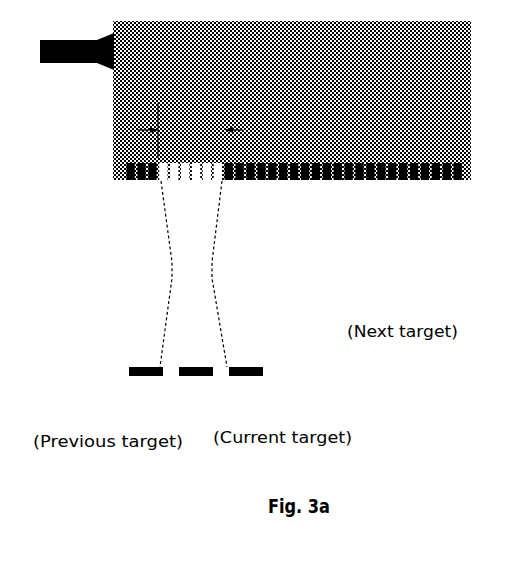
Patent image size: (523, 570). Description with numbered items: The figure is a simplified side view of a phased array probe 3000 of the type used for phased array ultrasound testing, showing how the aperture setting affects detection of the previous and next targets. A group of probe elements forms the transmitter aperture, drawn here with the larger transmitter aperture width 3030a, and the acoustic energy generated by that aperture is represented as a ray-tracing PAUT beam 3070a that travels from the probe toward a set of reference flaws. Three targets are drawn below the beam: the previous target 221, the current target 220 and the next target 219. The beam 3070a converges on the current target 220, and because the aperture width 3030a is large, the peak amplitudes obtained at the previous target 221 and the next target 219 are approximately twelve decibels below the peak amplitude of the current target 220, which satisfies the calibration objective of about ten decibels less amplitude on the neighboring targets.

The phased array probe 3000 is at (113, 125).
The transmitter aperture width 3030a is at (190, 141).
The PAUT beam 3070a is at (172, 287).
The next target 219 is at (253, 367).
The current target 220 is at (205, 376).
The previous target 221 is at (148, 376).